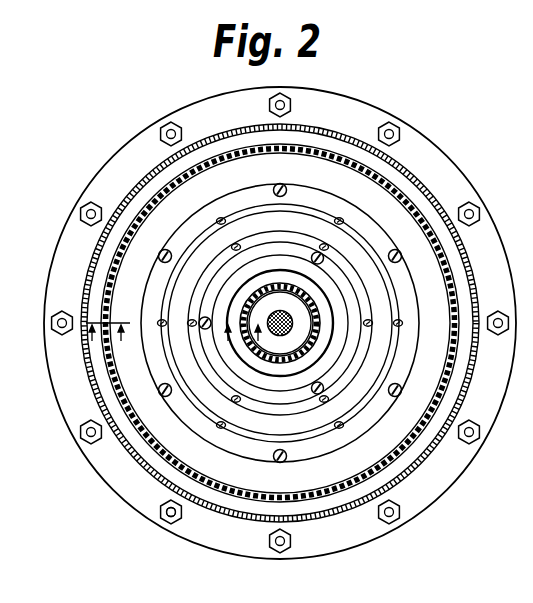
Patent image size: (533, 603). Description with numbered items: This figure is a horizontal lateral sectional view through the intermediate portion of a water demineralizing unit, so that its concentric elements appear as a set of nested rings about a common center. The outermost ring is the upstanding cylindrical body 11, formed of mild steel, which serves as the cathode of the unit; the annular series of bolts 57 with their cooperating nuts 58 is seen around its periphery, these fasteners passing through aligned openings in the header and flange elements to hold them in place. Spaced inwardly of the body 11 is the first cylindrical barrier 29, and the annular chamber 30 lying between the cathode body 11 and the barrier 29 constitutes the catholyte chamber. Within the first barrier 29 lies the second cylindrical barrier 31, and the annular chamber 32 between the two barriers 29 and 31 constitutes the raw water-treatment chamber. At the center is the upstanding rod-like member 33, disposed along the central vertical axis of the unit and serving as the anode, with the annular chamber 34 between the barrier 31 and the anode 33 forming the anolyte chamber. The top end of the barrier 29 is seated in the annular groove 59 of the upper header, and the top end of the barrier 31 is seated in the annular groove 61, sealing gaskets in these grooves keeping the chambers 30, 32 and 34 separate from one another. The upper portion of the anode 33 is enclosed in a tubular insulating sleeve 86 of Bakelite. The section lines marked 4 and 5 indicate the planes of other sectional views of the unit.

The cylindrical body 11 is at (87, 394).
The annular groove 59 is at (402, 178).
The first cylindrical barrier 29 is at (147, 445).
The annular chamber 30 is at (466, 474).
The annular chamber 32 is at (428, 379).
The bolts 57 is at (166, 516).
The nuts 58 is at (169, 523).
The annular groove 61 is at (260, 299).
The second cylindrical barrier 31 is at (296, 351).
The annular chamber 34 is at (277, 343).
The rod-like member 33 is at (225, 323).
The tubular insulating sleeve 86 is at (283, 311).
The section line 4- 4 is at (108, 339).
The section line 5- 5 is at (242, 340).